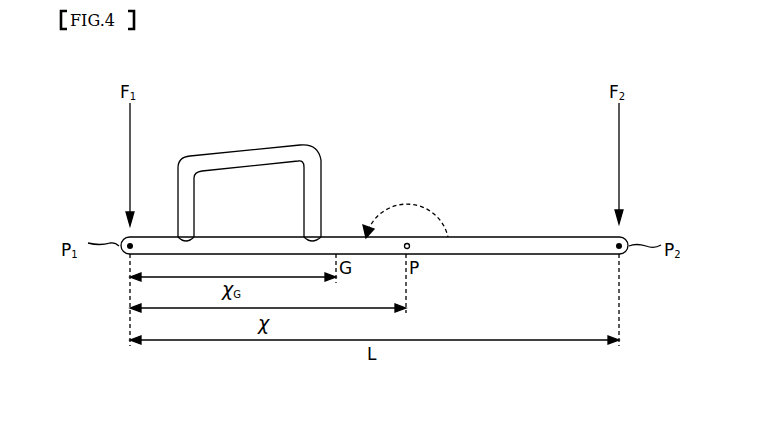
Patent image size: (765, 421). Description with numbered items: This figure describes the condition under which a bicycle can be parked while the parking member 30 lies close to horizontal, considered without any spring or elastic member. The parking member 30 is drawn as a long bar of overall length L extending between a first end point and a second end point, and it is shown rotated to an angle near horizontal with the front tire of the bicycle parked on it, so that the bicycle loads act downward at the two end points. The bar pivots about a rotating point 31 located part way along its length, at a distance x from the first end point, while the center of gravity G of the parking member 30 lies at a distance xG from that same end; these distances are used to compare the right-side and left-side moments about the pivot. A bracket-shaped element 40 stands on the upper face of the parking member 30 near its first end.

The parking member 30 is at (549, 245).
The pivot point 31 is at (407, 243).
The handle 40 is at (322, 148).